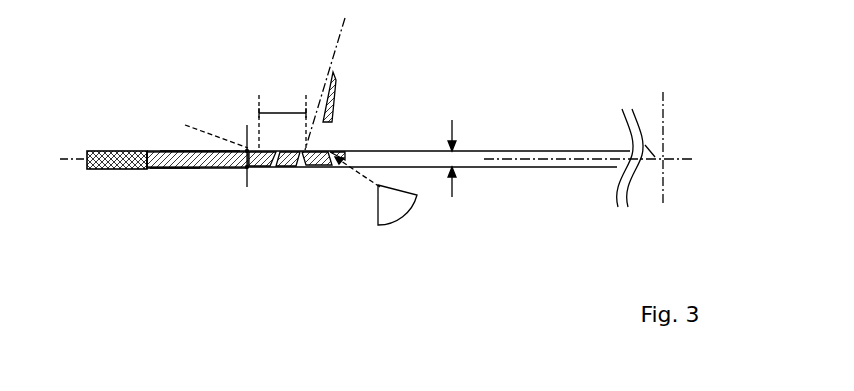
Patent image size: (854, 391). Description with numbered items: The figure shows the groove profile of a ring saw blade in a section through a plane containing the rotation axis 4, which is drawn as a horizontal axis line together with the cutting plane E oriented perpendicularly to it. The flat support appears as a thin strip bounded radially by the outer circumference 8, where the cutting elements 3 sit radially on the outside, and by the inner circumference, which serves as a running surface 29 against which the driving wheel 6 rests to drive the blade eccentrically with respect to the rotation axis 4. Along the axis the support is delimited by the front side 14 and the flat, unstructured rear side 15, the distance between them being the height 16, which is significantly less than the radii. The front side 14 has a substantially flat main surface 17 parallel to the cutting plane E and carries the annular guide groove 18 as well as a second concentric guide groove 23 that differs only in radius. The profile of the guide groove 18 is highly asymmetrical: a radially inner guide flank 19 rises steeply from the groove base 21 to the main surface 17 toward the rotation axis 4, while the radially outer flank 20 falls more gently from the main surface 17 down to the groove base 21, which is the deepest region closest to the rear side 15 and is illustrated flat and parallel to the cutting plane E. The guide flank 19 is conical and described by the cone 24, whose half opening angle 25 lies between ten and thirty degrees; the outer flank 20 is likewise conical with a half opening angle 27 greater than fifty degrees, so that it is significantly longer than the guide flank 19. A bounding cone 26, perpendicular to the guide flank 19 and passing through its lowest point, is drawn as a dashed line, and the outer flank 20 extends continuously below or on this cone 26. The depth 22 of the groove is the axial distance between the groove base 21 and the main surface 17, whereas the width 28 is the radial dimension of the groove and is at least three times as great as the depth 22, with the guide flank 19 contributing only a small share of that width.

The cutting elements 3 is at (107, 150).
The rotation axis 4 is at (658, 156).
The driving wheel 6 is at (512, 150).
The outer circumference 8 is at (148, 172).
The front side 14 is at (171, 150).
The rear side 15 is at (161, 169).
The height 16 is at (452, 120).
The main surface 17 is at (197, 150).
The guide groove 18 is at (310, 222).
The guide flank 19 is at (316, 169).
The outer flank 20 is at (271, 169).
The groove base 21 is at (297, 169).
The depth 22 is at (247, 150).
The guide groove 23 is at (240, 170).
The cone 24 is at (331, 62).
The half opening angle 25 is at (332, 110).
The cone 26 is at (183, 123).
The half opening angle 27 is at (393, 208).
The width 28 is at (285, 112).
The running surface 29 is at (351, 201).
The cutting plane E is at (662, 137).